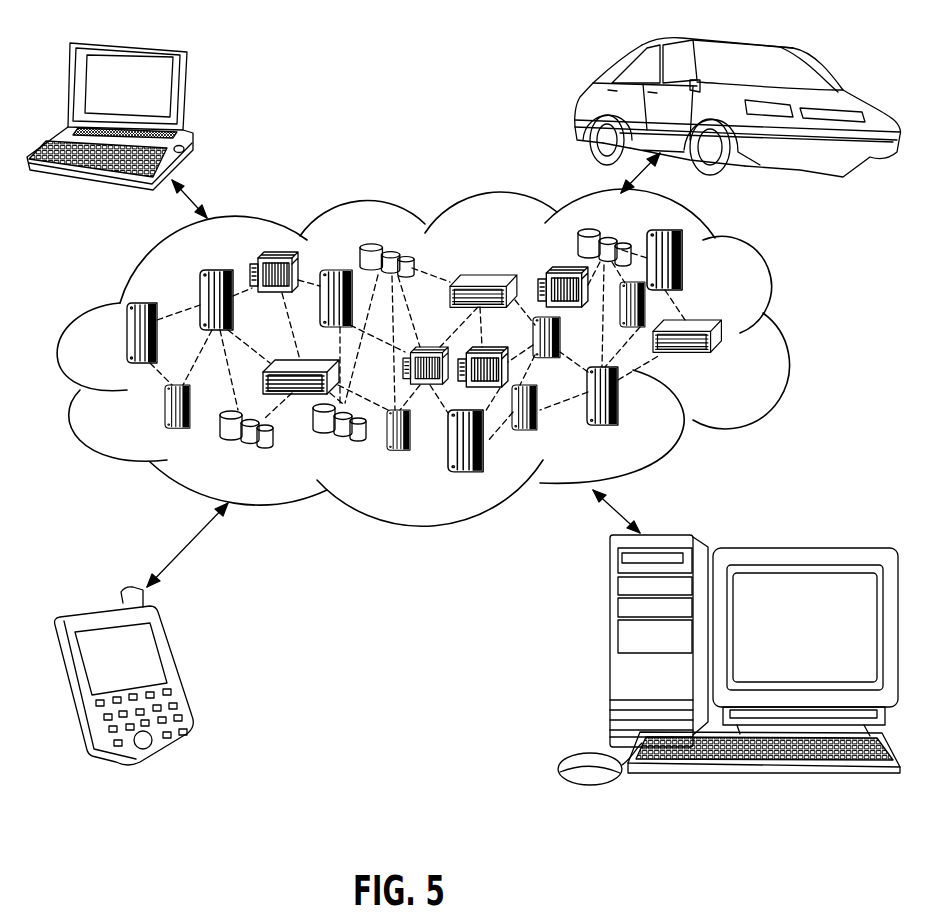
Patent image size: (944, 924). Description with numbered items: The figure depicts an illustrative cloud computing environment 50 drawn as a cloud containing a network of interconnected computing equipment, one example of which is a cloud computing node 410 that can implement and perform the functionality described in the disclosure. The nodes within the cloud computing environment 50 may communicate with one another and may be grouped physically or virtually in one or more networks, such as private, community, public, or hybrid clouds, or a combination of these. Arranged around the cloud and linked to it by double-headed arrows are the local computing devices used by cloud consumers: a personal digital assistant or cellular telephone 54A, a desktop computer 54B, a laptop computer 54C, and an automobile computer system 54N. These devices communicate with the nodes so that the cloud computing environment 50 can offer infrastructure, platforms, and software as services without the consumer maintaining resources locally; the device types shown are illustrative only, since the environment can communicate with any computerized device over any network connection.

The cloud computing environment 50 is at (777, 300).
The cloud computing node 410 is at (743, 357).
The personal digital assistant or cellular telephone 54A is at (177, 670).
The desktop computer 54B is at (608, 650).
The laptop computer 54C is at (188, 95).
The automobile computer system 54N is at (583, 100).